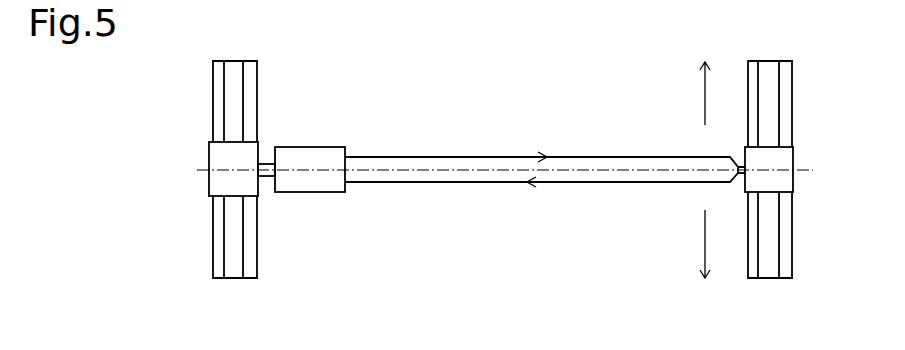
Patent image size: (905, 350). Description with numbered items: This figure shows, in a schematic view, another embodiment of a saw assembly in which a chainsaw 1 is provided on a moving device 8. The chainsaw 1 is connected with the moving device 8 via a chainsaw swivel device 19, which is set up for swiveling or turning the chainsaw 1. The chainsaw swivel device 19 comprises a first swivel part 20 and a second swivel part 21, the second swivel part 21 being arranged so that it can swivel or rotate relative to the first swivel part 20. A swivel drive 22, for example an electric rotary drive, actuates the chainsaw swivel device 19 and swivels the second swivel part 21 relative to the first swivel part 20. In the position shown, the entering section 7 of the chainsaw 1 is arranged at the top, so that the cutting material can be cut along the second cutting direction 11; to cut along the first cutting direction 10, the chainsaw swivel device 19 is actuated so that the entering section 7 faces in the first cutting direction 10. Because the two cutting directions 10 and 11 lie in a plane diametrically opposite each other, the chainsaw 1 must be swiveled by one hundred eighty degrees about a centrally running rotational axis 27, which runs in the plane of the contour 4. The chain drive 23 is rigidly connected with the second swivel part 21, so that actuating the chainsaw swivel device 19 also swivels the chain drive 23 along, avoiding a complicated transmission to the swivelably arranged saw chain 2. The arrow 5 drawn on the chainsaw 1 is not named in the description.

The chainsaw 1 is at (362, 183).
The saw chain 2 is at (422, 156).
The contour 4 is at (400, 183).
The first direction arrow 5 is at (497, 156).
The entering section 7 is at (472, 183).
The moving device 8 is at (195, 104).
The first cutting direction 10 is at (705, 248).
The second cutting direction 11 is at (703, 95).
The chainsaw swivel device 19 is at (267, 164).
The first swivel part 20 is at (188, 201).
The swivel drive 22 is at (227, 177).
The second swivel part 21 is at (302, 182).
The chain drive 23 is at (307, 206).
The rotational axis 27 is at (197, 170).